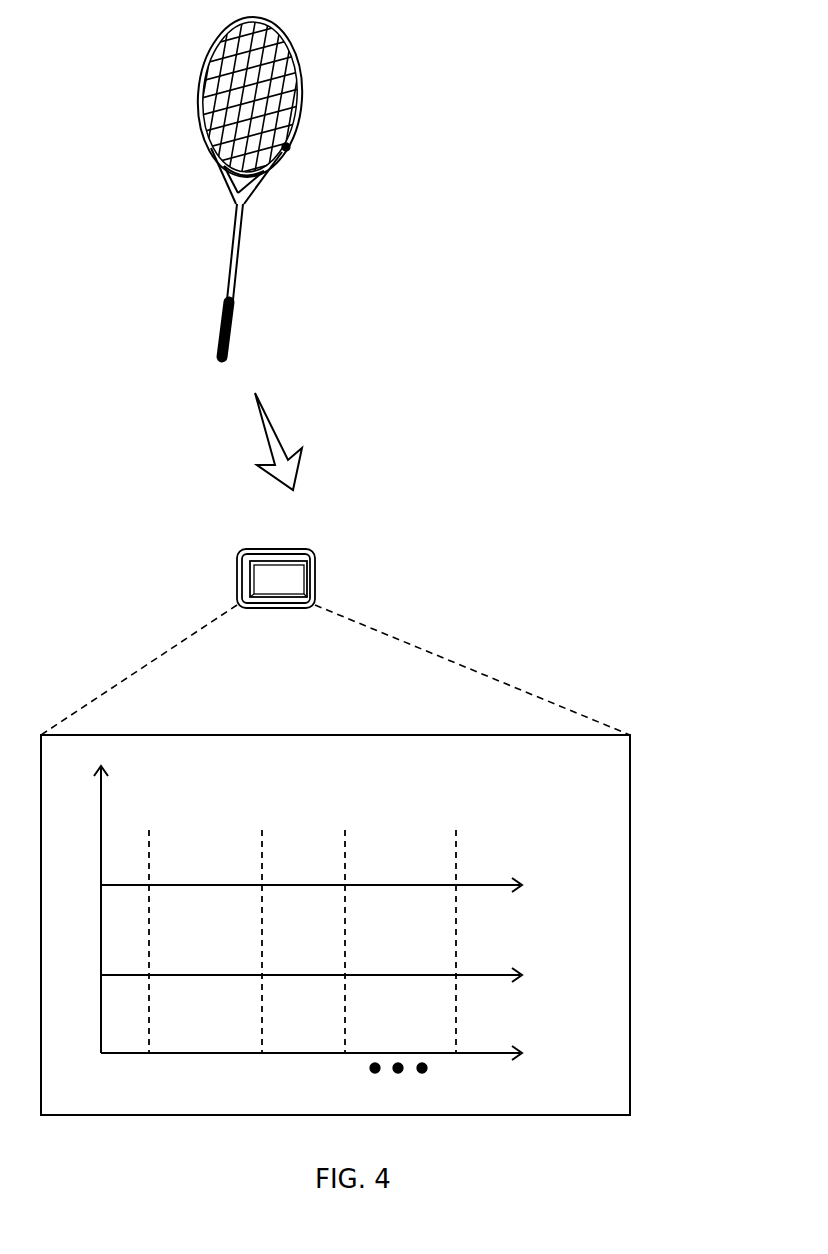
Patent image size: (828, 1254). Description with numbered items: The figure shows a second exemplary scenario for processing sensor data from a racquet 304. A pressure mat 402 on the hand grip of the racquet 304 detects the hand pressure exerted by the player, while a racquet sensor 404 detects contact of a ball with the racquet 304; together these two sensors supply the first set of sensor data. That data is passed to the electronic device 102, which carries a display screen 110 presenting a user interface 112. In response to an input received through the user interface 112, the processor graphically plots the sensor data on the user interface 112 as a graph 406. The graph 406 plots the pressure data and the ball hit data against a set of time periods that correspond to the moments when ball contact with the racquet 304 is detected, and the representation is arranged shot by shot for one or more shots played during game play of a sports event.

The racquet 304 is at (300, 88).
The pressure mat 402 is at (233, 332).
The racquet sensor 404 is at (289, 146).
The electronic device 102 is at (236, 565).
The display screen 110 is at (308, 561).
The user interface 112 is at (303, 592).
The graph 406 is at (617, 780).